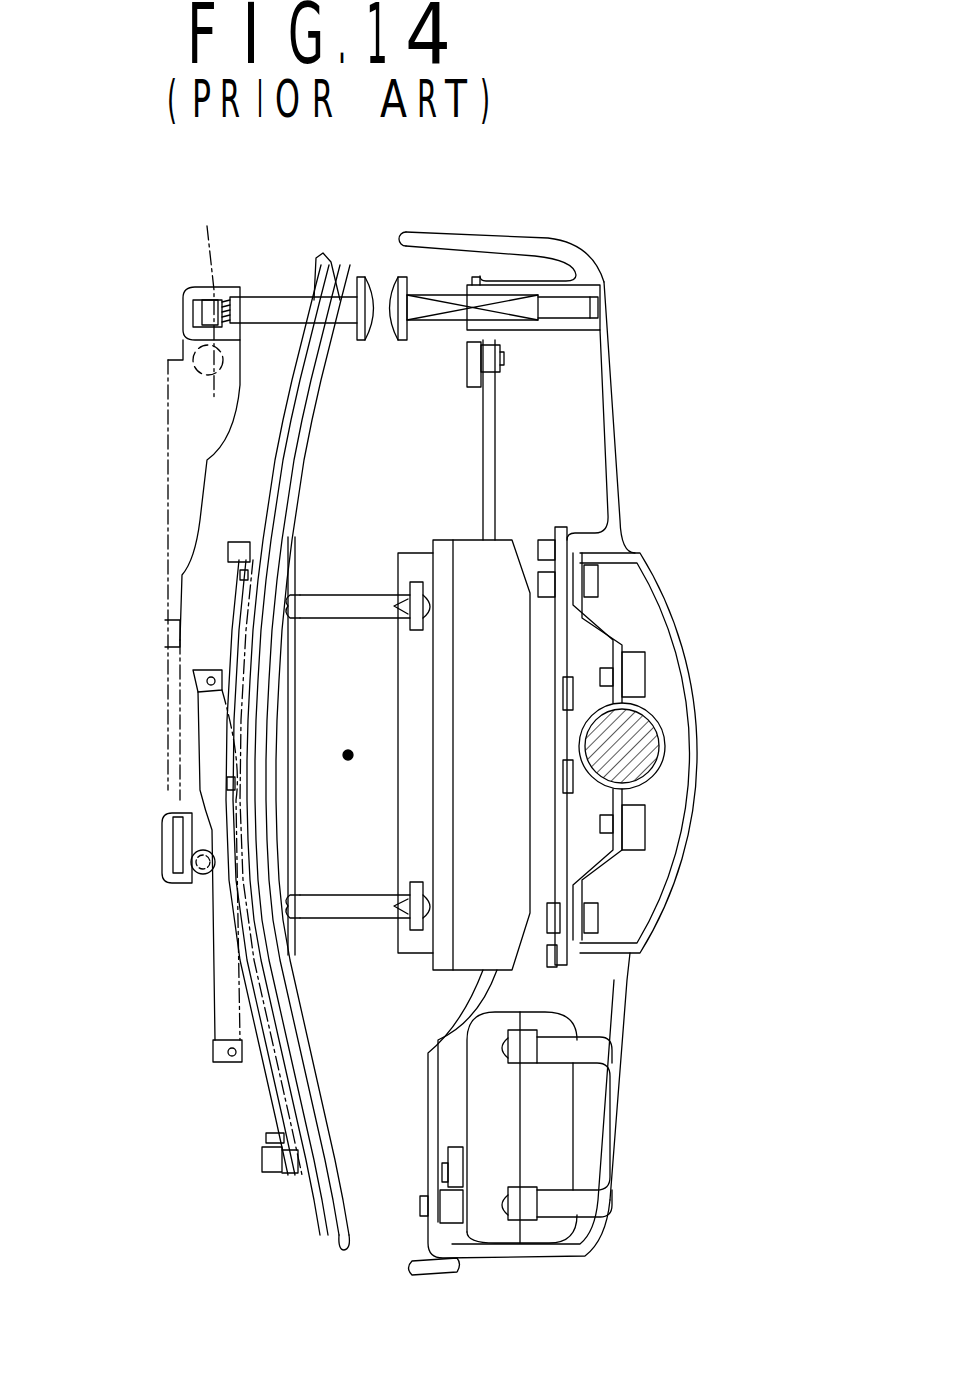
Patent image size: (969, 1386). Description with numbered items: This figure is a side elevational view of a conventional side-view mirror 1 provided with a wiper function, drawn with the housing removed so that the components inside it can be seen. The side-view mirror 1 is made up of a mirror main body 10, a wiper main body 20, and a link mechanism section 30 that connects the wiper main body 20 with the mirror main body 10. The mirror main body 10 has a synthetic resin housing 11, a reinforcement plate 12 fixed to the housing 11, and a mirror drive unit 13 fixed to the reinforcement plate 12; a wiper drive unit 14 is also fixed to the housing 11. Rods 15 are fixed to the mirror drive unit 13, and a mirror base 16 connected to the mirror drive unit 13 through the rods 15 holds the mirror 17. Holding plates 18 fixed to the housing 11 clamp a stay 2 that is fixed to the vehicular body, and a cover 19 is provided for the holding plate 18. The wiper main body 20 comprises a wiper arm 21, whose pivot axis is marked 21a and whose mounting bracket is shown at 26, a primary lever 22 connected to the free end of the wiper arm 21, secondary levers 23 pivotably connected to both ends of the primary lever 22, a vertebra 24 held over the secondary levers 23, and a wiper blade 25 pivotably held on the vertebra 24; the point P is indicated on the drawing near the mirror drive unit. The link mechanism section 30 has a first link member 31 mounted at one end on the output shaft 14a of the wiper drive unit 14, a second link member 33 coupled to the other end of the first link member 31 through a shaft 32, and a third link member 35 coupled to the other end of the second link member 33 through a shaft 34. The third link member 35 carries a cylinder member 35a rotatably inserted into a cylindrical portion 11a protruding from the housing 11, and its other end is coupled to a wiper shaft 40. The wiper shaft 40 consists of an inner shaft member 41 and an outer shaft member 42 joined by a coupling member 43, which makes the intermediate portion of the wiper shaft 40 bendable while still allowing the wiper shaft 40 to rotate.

The side-view mirror 1 is at (180, 234).
The stay 2 is at (636, 762).
The mirror main body 10 is at (606, 285).
The housing 11 is at (621, 464).
The cylindrical portion 11a is at (583, 332).
The reinforcement plate 12 is at (555, 526).
The mirror drive unit 13 is at (406, 962).
The wiper drive unit 14 is at (589, 1113).
The output shaft 14a is at (470, 1178).
The rods 15 is at (331, 592).
The mirror base 16 is at (340, 1252).
The mirror 17 is at (314, 1222).
The holding plates 18 is at (654, 663).
The cover 19 is at (698, 702).
The wiper main body 20 is at (165, 898).
The wiper arm 21 is at (165, 470).
The pivot axis 21a is at (210, 296).
The primary lever 22 is at (196, 960).
The secondary levers 23 is at (236, 540).
The vertebra 24 is at (266, 1172).
The wiper blade 25 is at (290, 1195).
The pivot bracket 26 is at (196, 288).
The link mechanism section 30 is at (510, 438).
The first link member 31 is at (455, 1224).
The shaft 32 is at (420, 1210).
The second link member 33 is at (427, 1086).
The shaft 34 is at (505, 359).
The third link member 35 is at (472, 384).
The cylinder member 35a is at (612, 314).
The wiper shaft 40 is at (391, 246).
The inner shaft member 41 is at (434, 318).
The outer shaft member 42 is at (268, 296).
The coupling member 43 is at (398, 338).
The pivot point P is at (348, 750).